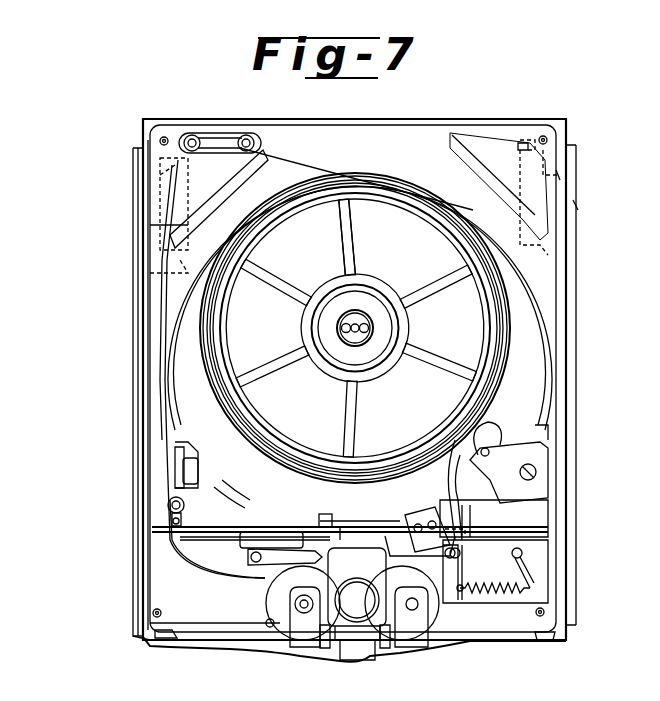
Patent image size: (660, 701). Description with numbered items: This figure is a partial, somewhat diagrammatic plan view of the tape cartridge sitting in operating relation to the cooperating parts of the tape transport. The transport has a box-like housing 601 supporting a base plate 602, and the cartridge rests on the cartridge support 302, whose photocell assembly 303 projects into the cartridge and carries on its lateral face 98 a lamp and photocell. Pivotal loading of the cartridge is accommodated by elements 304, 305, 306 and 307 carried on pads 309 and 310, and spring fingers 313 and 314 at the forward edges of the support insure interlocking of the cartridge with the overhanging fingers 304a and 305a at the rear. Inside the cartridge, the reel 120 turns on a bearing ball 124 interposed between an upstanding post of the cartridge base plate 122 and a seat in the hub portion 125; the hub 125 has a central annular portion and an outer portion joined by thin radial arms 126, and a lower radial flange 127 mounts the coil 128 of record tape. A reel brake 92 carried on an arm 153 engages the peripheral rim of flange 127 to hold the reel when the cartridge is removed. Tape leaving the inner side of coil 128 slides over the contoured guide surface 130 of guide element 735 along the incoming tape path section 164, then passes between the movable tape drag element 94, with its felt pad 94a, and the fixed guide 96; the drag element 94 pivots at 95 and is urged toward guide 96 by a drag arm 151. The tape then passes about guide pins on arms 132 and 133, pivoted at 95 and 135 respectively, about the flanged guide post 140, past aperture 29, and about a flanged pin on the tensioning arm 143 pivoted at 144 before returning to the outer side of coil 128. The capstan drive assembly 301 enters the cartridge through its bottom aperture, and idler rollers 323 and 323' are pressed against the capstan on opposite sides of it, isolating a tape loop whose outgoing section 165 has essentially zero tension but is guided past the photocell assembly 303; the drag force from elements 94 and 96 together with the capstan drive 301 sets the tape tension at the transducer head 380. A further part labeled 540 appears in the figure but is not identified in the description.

The aperture 29 is at (176, 452).
The reel brake 92 is at (325, 517).
The tape drag element 94 is at (470, 516).
The felt pad 94a is at (475, 530).
The pivot point 95 is at (468, 552).
The fixed guide 96 is at (440, 520).
The lateral face 98 is at (178, 482).
The reel 120 is at (167, 312).
The base plate 122 is at (162, 415).
The bearing ball 124 is at (350, 340).
The hub portion 125 is at (357, 322).
The radial arms 126 is at (428, 274).
The lower radial flange 127 is at (385, 146).
The coil of record tape 128 is at (200, 345).
The contoured guide surface 130 is at (497, 430).
The arm 132 is at (398, 530).
The arm 133 is at (245, 540).
The fixed pivot point 135 is at (250, 560).
The flanged guide post 140 is at (187, 505).
The tensioning arm 143 is at (213, 140).
The pivot shaft 144 is at (262, 143).
The drag arm 151 is at (465, 573).
The arm 153 is at (335, 515).
The incoming tape path section 164 is at (465, 470).
The outgoing tape path section 165 is at (172, 565).
The capstan drive assembly 301 is at (360, 588).
The cartridge support 302 is at (200, 494).
The photocell assembly 303 is at (165, 478).
The element for pivotal loading 304 is at (160, 170).
The overhanging finger 304a is at (140, 195).
The element for pivotal loading 305 is at (516, 136).
The overhanging finger 305a is at (565, 176).
The element for pivotal loading 306 is at (140, 240).
The element for pivotal loading 307 is at (575, 205).
The pad 309 is at (150, 273).
The pad 310 is at (560, 267).
The spring finger 313 is at (152, 643).
The spring finger 314 is at (543, 638).
The idler roller 323 is at (281, 606).
The idler roller 323' is at (414, 622).
The transducer head 380 is at (332, 645).
The tape guide pin 540 is at (232, 146).
The housing 601 is at (134, 636).
The base plate 602 is at (135, 296).
The guide element 735 is at (513, 436).